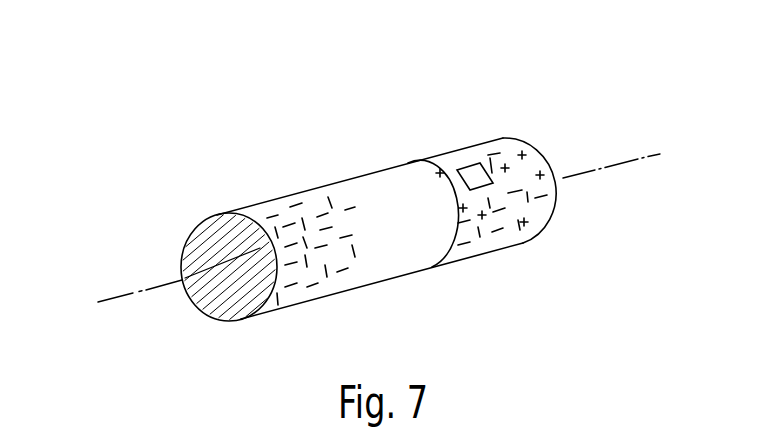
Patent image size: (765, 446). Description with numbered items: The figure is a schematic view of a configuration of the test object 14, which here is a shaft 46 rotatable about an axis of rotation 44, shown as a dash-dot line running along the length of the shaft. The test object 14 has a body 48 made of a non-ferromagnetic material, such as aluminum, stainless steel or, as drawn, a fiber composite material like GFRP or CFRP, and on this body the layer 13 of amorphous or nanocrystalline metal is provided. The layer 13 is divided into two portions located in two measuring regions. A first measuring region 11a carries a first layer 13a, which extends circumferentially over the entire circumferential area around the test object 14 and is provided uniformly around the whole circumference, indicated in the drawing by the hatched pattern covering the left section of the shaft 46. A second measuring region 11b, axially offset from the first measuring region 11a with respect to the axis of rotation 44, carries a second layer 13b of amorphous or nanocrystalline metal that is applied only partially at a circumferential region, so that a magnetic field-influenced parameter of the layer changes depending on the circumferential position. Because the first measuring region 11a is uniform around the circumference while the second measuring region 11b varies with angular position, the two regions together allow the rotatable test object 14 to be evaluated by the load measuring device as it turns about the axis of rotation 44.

The first measuring region 11a is at (352, 163).
The second measuring region 11b is at (463, 120).
The layer 13 is at (393, 288).
The first layer 13a is at (413, 253).
The second layer 13b is at (466, 168).
The test object 14 is at (572, 132).
The axis of rotation 44 is at (152, 285).
The shaft 46 is at (523, 243).
The body 48 is at (503, 143).